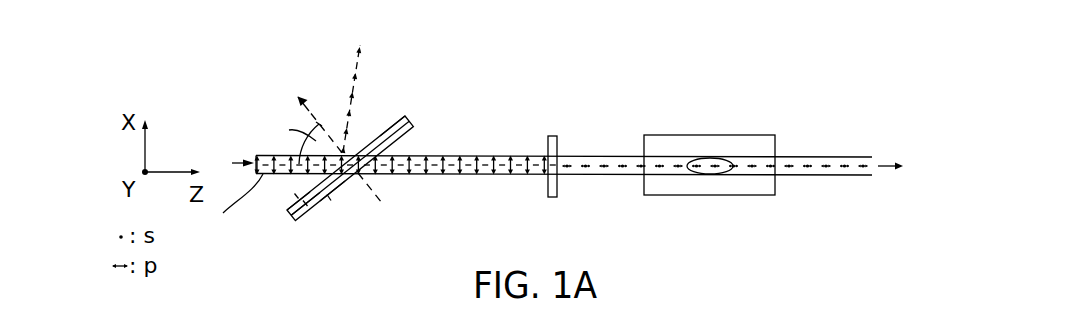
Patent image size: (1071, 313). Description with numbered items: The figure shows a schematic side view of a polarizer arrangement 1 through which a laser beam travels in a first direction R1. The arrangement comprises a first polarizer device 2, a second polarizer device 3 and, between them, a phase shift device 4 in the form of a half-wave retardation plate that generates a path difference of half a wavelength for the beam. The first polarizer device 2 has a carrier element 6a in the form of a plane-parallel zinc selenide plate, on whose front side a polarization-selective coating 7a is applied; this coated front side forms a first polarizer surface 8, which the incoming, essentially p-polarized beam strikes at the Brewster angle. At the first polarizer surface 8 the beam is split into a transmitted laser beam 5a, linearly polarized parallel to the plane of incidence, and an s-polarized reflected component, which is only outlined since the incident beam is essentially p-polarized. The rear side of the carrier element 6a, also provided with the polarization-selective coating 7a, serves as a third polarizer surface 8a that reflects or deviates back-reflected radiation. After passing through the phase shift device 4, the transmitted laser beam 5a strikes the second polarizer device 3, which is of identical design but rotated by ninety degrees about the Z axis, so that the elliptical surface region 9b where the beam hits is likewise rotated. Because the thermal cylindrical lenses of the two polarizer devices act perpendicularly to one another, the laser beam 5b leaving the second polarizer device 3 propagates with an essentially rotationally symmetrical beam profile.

The polarizer arrangement 1 is at (768, 60).
The first polarizer device 2 is at (387, 110).
The second polarizer device 3 is at (767, 124).
The phase shift device 4 is at (547, 146).
The transmitted laser beam 5a is at (450, 157).
The laser beam transmitted by the second polarizer device 5b is at (834, 157).
The carrier element 6a is at (306, 206).
The polarization-selective coating 7a is at (403, 117).
The first polarizer surface 8 is at (296, 197).
The third polarizer surface 8a is at (329, 199).
The elliptical surface region 9b is at (716, 158).
The first direction R1 is at (234, 158).